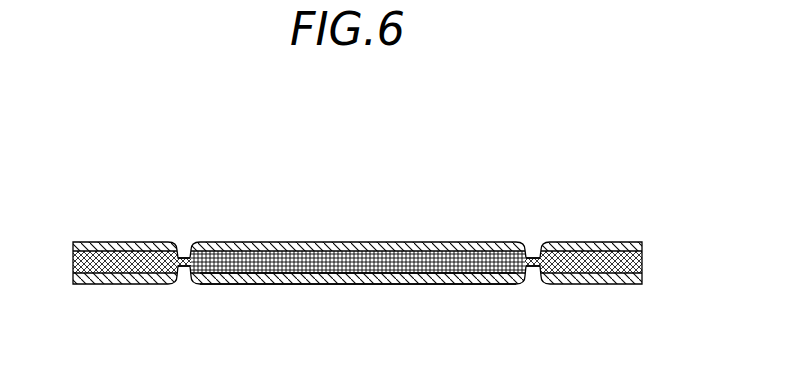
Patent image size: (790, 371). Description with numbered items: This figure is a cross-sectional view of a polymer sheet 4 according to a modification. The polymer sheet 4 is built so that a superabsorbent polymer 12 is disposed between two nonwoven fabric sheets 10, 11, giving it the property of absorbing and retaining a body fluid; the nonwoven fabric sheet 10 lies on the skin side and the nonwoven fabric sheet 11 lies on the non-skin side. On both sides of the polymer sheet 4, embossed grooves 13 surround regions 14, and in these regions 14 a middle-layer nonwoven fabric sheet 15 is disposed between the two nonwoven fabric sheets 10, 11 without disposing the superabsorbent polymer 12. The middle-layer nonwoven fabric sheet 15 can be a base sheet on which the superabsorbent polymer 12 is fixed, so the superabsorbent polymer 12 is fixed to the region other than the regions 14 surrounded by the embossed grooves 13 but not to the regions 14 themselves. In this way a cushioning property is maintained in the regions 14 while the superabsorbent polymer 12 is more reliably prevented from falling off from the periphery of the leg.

The polymer sheet 4 is at (613, 189).
The nonwoven fabric sheet 10 is at (394, 243).
The nonwoven fabric sheet 11 is at (342, 274).
The superabsorbent polymer 12 is at (452, 284).
The embossed grooves 13 is at (178, 242).
The regions surrounded by the embossed grooves 14 is at (115, 242).
The middle-layer nonwoven fabric sheet 15 is at (118, 278).